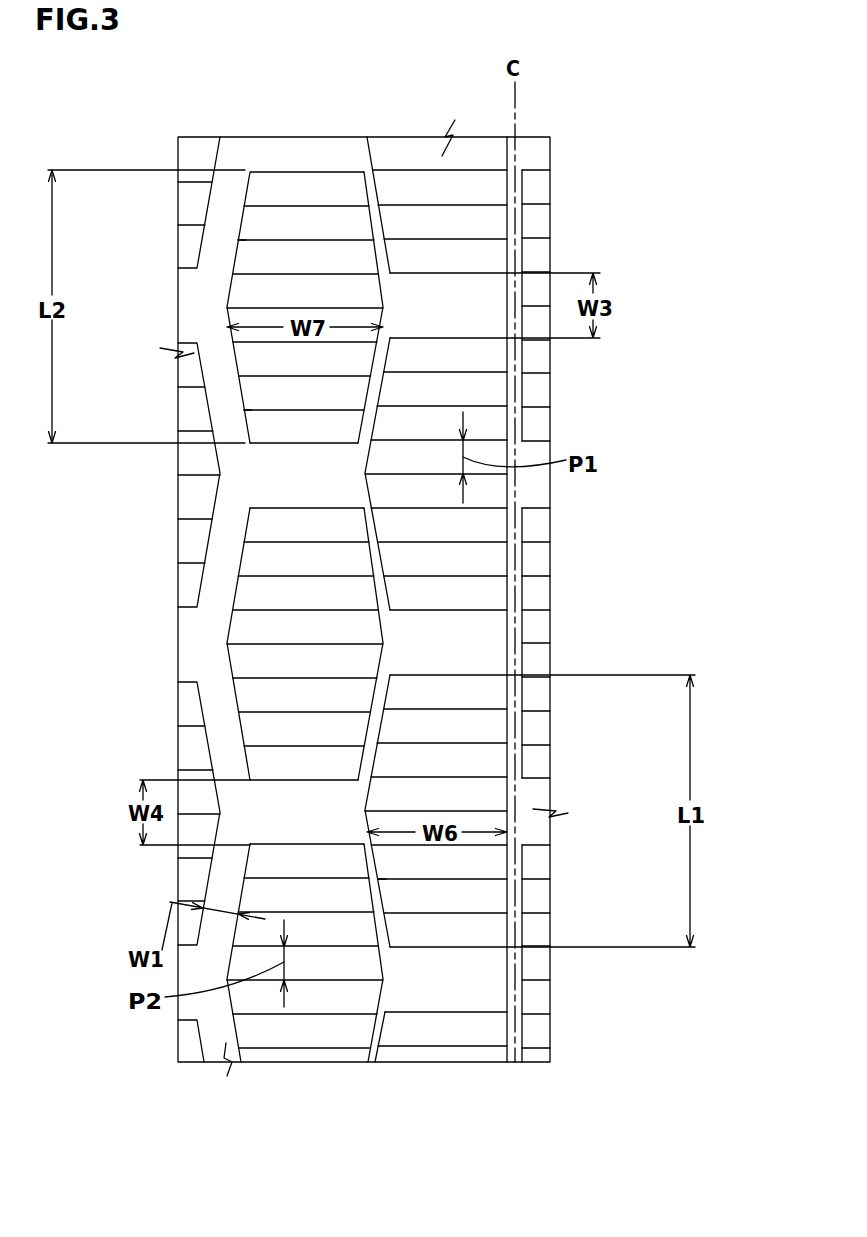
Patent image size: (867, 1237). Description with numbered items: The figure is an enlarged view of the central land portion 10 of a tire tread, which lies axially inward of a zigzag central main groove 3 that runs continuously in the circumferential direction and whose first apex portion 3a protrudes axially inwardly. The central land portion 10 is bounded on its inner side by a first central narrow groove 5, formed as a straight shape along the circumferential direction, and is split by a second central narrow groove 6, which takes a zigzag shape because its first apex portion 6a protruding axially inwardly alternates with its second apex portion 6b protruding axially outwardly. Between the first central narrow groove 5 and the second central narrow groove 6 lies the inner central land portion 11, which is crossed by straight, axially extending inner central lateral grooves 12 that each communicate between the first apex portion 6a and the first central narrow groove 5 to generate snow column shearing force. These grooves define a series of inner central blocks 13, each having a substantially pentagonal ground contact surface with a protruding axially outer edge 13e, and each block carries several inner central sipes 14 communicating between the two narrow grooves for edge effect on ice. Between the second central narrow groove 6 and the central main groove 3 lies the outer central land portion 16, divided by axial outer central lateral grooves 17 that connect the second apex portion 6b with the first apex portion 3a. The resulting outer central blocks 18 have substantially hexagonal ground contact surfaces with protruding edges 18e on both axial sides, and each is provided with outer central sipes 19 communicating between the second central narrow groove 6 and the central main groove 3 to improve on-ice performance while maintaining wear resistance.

The central main groove 3 is at (225, 185).
The first apex portion 3a is at (242, 806).
The first central narrow groove 5 is at (523, 158).
The second central narrow groove 6 is at (361, 169).
The first apex portion 6a is at (399, 632).
The second apex portion 6b is at (348, 825).
The central land portion 10 is at (430, 67).
The inner central land portion 11 is at (426, 211).
The inner central lateral groove 12 is at (448, 308).
The inner central block 13 is at (427, 446).
The axially outer edge 13e is at (373, 893).
The inner central sipe 14 is at (488, 441).
The outer central land portion 16 is at (298, 209).
The outer central lateral groove 17 is at (298, 472).
The outer central block 18 is at (273, 292).
The axially both edges 18e is at (242, 228).
The outer central sipe 19 is at (303, 575).